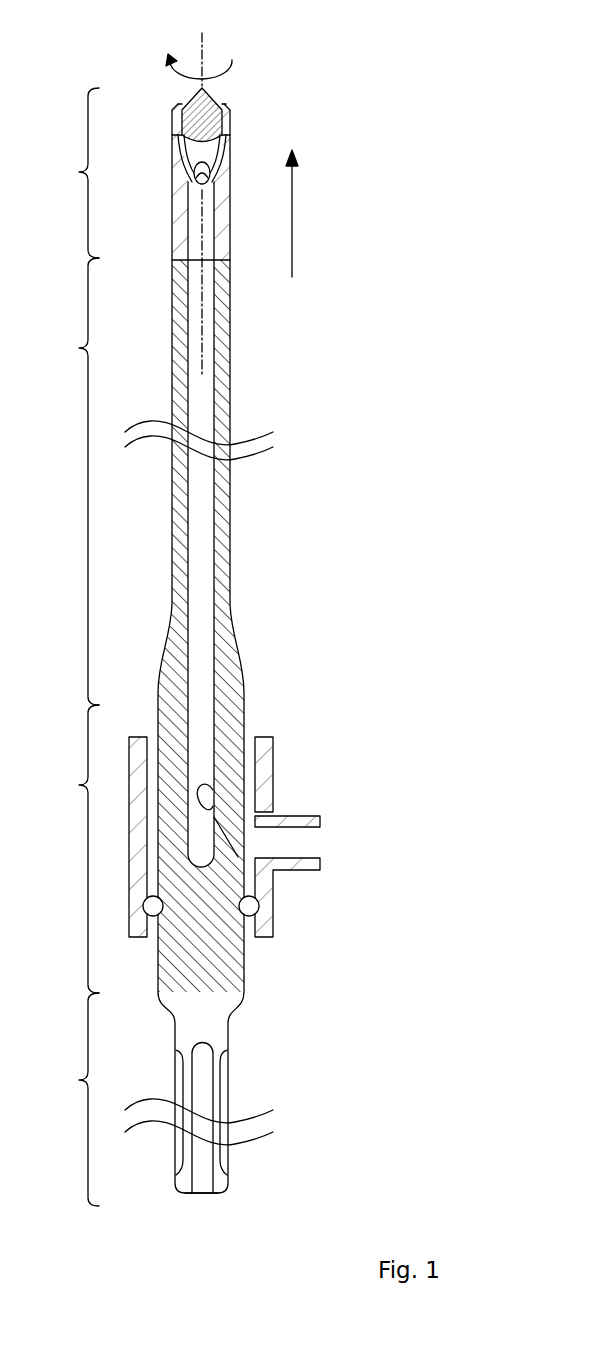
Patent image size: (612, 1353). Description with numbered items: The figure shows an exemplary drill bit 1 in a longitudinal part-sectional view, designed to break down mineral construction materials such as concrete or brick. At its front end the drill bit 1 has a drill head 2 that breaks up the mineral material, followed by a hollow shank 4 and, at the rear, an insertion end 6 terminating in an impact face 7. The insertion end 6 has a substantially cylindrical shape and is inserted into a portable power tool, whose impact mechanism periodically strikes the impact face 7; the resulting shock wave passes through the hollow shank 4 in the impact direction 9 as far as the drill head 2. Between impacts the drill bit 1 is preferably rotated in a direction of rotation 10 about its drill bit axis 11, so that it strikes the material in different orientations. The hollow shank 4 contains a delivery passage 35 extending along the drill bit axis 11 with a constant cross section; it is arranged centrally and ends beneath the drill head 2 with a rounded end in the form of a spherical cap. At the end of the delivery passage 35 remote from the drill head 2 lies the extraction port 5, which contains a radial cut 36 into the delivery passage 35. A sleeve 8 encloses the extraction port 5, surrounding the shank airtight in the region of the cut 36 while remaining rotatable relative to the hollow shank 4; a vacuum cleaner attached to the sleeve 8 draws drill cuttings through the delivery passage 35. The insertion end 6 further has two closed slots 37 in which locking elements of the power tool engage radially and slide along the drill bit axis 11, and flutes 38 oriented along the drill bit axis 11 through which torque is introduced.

The drill bit 1 is at (146, 91).
The drill head 2 is at (137, 173).
The hollow shank 4 is at (110, 481).
The extraction port 5 is at (103, 846).
The insertion end 6 is at (111, 1099).
The impact face 7 is at (192, 1215).
The sleeve 8 is at (267, 765).
The impact direction 9 is at (293, 222).
The direction of rotation 10 is at (233, 69).
The drill bit axis 11 is at (203, 47).
The delivery passage 35 is at (198, 412).
The radial cut 36 is at (232, 823).
The closed slots 37 is at (225, 1067).
The flutes 38 is at (203, 1092).